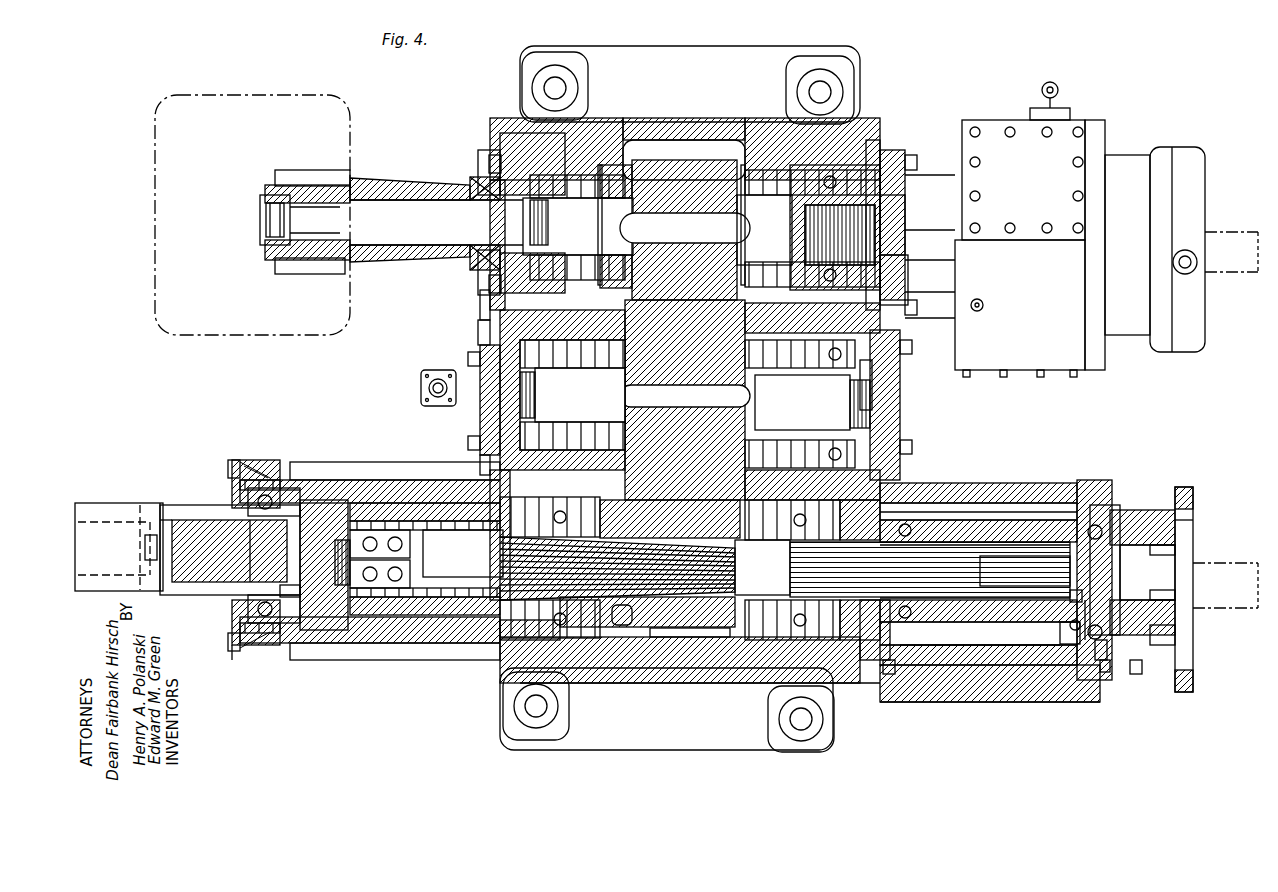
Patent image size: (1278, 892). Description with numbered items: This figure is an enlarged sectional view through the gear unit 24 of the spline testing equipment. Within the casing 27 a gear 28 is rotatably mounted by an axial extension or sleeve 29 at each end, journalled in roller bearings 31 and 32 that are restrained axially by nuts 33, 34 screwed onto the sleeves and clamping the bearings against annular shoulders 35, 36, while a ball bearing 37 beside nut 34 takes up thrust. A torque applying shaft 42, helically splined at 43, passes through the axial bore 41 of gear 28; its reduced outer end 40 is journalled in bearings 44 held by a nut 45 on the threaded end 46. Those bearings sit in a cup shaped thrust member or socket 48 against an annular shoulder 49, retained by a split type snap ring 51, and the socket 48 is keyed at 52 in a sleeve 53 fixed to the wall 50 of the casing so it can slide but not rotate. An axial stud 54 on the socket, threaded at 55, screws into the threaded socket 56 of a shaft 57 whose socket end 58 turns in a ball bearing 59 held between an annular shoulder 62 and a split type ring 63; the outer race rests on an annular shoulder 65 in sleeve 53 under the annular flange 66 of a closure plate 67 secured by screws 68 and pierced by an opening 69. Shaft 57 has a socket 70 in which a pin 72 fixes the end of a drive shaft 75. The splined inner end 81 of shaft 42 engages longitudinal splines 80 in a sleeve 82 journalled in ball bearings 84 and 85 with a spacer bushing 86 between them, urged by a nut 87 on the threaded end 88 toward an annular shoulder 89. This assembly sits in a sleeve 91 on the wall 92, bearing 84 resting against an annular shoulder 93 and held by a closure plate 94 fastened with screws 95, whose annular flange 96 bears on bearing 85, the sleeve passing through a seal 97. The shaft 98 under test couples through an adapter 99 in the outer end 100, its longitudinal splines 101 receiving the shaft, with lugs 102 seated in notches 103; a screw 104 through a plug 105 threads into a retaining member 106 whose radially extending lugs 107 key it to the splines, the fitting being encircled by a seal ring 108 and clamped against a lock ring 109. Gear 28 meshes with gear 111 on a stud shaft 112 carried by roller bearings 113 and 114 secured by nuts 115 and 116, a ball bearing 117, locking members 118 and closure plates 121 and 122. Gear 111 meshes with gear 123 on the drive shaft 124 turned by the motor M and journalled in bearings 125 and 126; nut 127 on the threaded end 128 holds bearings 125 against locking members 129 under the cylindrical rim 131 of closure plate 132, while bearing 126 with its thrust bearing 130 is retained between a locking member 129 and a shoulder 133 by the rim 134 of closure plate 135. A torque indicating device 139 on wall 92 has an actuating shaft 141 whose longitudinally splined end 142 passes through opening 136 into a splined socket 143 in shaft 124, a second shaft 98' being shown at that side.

The motor M is at (204, 95).
The gear unit 24 is at (697, 118).
The casing 27 is at (690, 685).
The gear 28 is at (660, 638).
The axial extension or sleeve 29 is at (500, 582).
The bearing 31 is at (515, 650).
The bearing 32 is at (778, 642).
The nut 33 is at (515, 610).
The nut 34 is at (880, 665).
The annular shoulder 35 is at (625, 628).
The annular shoulder 36 is at (762, 567).
The ball bearing 37 is at (858, 690).
The outer end 40 is at (463, 553).
The axial bore 41 is at (530, 515).
The torque applying shaft 42 is at (428, 618).
The helical splines 43 is at (655, 555).
The bearings 44 is at (385, 600).
The nut 45 is at (345, 625).
The threaded end 46 is at (300, 605).
The cup shaped thrust member or socket 48 is at (390, 503).
The annular shoulder 49 is at (370, 503).
The wall 50 is at (490, 306).
The split type snap ring 51 is at (405, 503).
The key 52 is at (420, 495).
The sleeve 53 is at (315, 462).
The axial stud 54 is at (233, 595).
The external threads 55 is at (230, 550).
The threaded socket 56 is at (170, 515).
The shaft 57 is at (110, 503).
The socket end 58 is at (256, 551).
The bearing 59 is at (262, 485).
The annular shoulder 62 is at (234, 460).
The split type ring 63 is at (307, 565).
The annular shoulder 65 is at (290, 500).
The annular flange 66 is at (234, 650).
The closure plate 67 is at (235, 618).
The screws 68 is at (232, 648).
The opening 69 is at (232, 500).
The socket 70 is at (132, 537).
The pin 72 is at (145, 550).
The drive shaft 75 is at (86, 542).
The longitudinal splines 80 is at (985, 540).
The inner end 81 is at (928, 560).
The sleeve 82 is at (1005, 560).
The bearing 84 is at (935, 500).
The bearing 85 is at (1100, 520).
The spacer bushing 86 is at (960, 530).
The nut 87 is at (905, 500).
The threaded end 88 is at (845, 568).
The annular shoulder 89 is at (1100, 540).
The sleeve 91 is at (925, 505).
The wall 92 is at (912, 305).
The annular shoulder 93 is at (905, 660).
The closure plate 94 is at (1100, 665).
The screws 95 is at (1110, 675).
The annular flange 96 is at (1072, 640).
The seal 97 is at (1140, 660).
The shaft under test 98 is at (1225, 563).
The shaft under test 98' is at (1231, 236).
The adapter 99 is at (1190, 497).
The outer end 100 is at (1192, 522).
The longitudinal splines 101 is at (1147, 572).
The lugs 102 is at (1178, 640).
The notches 103 is at (1178, 548).
The screw 104 is at (1060, 630).
The plug 105 is at (1085, 645).
The retaining member 106 is at (1040, 648).
The radially extending lugs 107 is at (1090, 500).
The seal ring 108 is at (1150, 520).
The lock ring 109 is at (1080, 615).
The gear 111 is at (700, 445).
The stud shaft 112 is at (878, 400).
The bearing 113 is at (580, 370).
The bearing 114 is at (807, 404).
The nut 115 is at (478, 360).
The nut 116 is at (890, 372).
The ball bearing 117 is at (880, 445).
The locking members 118 is at (615, 330).
The closure plate 121 is at (480, 328).
The closure plate 122 is at (897, 345).
The gear 123 is at (700, 165).
The drive shaft 124 is at (614, 163).
The bearings 125 is at (560, 190).
The bearing 126 is at (850, 135).
The nut 127 is at (505, 160).
The threaded end 128 is at (556, 228).
The locking members 129 is at (605, 165).
The thrust bearing 130 is at (870, 160).
The cylindrical rim 131 is at (530, 150).
The closure plate 132 is at (489, 164).
The shoulder 133 is at (912, 160).
The rim 134 is at (895, 160).
The closure plate 135 is at (915, 185).
The opening 136 is at (905, 270).
The torque indicating device 139 is at (1062, 135).
The actuating shaft 141 is at (895, 210).
The longitudinally splined end 142 is at (764, 230).
The socket 143 is at (818, 227).